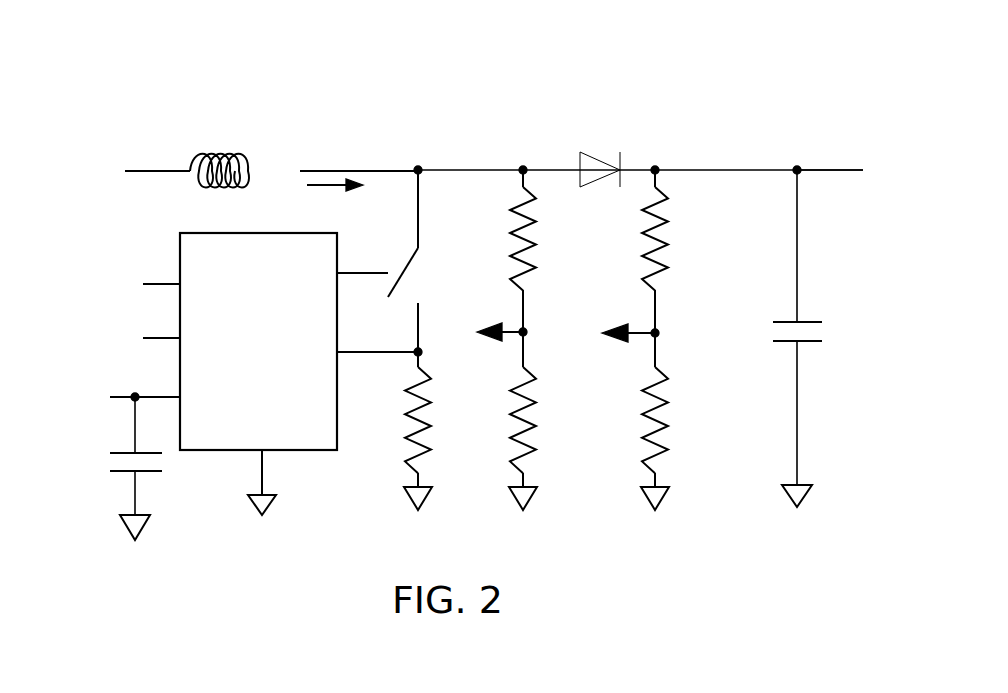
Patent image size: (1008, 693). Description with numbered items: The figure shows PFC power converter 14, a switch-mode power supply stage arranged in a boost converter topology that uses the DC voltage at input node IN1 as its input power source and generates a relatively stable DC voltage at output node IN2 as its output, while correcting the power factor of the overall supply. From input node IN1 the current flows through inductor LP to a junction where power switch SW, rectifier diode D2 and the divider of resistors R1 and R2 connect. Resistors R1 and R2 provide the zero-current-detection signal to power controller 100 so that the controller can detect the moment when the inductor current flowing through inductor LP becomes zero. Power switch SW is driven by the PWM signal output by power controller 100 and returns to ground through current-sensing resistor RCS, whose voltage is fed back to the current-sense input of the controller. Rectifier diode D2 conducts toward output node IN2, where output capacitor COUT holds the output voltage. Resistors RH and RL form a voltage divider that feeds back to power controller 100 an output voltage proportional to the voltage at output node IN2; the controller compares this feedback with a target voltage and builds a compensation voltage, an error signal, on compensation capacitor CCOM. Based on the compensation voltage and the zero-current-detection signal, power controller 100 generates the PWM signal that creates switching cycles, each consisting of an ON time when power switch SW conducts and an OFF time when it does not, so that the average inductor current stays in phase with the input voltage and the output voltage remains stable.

The PFC power converter 14 is at (483, 117).
The power controller 100 is at (293, 431).
The inductor LP is at (225, 155).
The power switch SW is at (421, 261).
The rectifier diode D2 is at (600, 157).
The resistor R1 is at (541, 251).
The resistor R2 is at (539, 421).
The resistor RH is at (673, 251).
The resistor RL is at (670, 421).
The current-sensing resistor RCS is at (440, 431).
The output capacitor COUT is at (820, 338).
The compensation capacitor CCOM is at (101, 468).
The input node IN1 is at (150, 175).
The output node IN2 is at (830, 172).